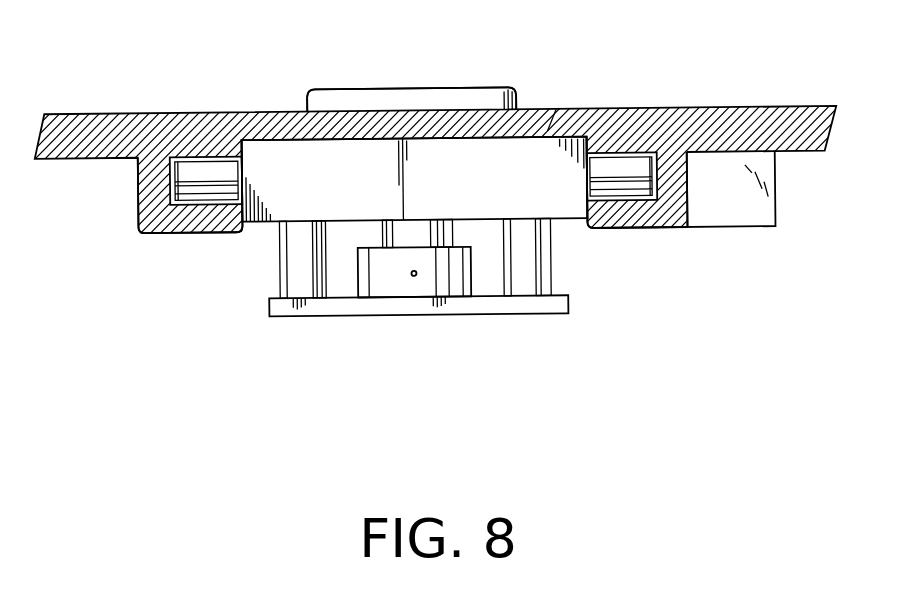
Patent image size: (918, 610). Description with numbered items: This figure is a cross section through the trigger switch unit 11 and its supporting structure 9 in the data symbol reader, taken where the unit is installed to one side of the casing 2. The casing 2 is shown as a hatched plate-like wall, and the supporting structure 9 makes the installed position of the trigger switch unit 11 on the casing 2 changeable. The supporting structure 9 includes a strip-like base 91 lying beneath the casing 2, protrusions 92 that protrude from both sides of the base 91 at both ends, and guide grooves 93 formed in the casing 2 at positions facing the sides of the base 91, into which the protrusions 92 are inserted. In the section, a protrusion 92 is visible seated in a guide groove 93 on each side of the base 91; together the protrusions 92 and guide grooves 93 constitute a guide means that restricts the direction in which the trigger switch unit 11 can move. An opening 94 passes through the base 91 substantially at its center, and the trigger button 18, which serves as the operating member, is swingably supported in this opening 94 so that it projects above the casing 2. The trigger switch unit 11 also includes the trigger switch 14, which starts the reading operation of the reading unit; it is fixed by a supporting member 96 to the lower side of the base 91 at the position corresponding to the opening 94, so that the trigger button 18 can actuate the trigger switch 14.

The casing 2 is at (137, 113).
The supporting structure 9 is at (302, 78).
The trigger button 18 is at (371, 101).
The base 91 is at (463, 150).
The opening 94 is at (558, 110).
The guide grooves 93 is at (140, 209).
The protrusions 92 is at (197, 204).
The trigger switch unit 11 is at (305, 321).
The trigger switch 14 is at (425, 289).
The supporting member 96 is at (527, 305).